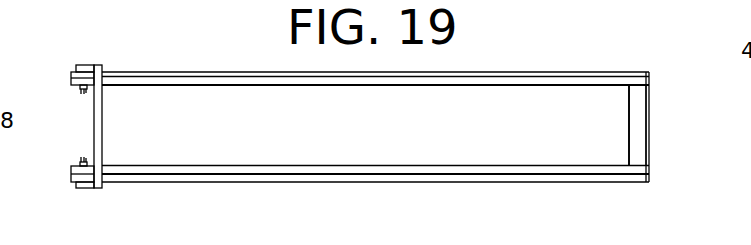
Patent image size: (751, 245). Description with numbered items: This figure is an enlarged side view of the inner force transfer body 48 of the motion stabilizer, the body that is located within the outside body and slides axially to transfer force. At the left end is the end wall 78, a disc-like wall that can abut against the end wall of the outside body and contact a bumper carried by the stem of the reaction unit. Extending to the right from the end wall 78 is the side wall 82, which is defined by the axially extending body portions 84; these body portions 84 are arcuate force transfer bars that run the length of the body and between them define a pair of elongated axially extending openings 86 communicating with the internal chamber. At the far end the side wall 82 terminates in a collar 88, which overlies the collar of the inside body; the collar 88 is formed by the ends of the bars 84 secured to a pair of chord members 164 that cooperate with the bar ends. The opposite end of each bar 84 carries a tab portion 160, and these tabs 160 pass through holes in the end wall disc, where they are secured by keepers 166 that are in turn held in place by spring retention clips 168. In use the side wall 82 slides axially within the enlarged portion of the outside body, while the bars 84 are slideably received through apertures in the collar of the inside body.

The inner force transfer body 48 is at (0, 49).
The end wall 78 is at (103, 118).
The side wall 82 is at (164, 70).
The axially extending body portions 84 is at (511, 77).
The elongated axially extending openings 86 is at (298, 86).
The collar 88 is at (640, 110).
The tab portion 160 is at (72, 79).
The chord members 164 is at (645, 144).
The keepers 166 is at (86, 64).
The spring retention clips 168 is at (83, 156).